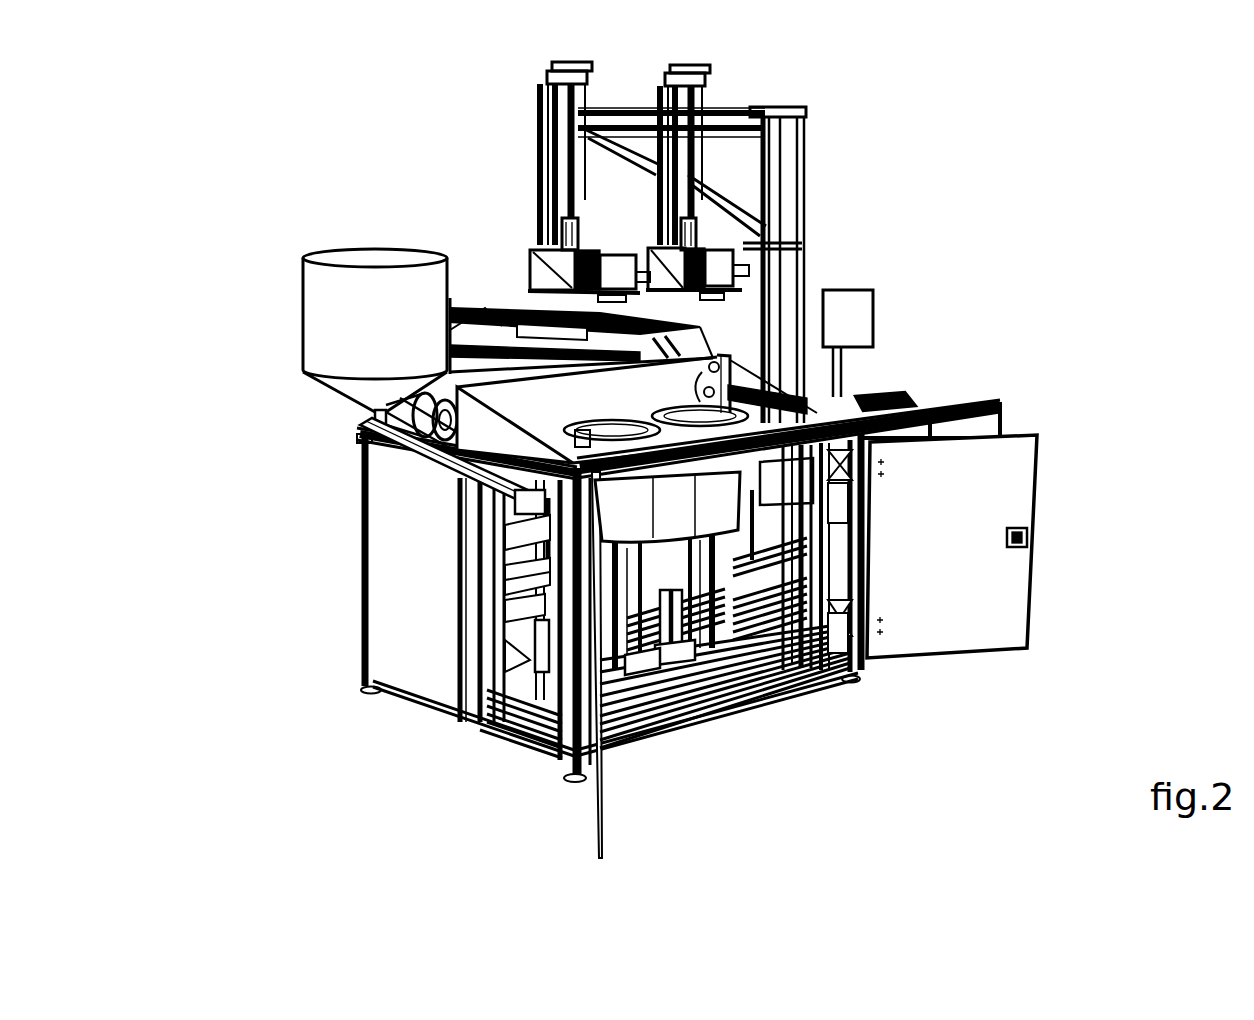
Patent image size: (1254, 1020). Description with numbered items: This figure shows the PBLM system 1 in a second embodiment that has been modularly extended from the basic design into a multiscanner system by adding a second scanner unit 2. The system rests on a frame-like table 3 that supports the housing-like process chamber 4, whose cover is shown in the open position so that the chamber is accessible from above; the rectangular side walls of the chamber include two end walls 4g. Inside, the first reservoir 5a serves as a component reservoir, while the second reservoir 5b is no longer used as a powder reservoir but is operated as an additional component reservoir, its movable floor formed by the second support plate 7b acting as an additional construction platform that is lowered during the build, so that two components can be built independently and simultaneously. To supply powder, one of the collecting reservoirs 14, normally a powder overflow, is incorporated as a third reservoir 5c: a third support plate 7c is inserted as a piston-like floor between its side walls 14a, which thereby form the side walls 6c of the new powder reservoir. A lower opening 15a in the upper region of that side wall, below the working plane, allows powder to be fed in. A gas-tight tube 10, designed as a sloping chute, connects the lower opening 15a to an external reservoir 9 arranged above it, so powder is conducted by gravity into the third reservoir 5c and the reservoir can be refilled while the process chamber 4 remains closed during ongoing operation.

The PBLM system 1 is at (214, 165).
The scanner unit 2 is at (604, 228).
The table 3 is at (935, 406).
The process chamber 4 is at (728, 342).
The end wall 4g is at (478, 455).
The first reservoir 5a is at (605, 425).
The second reservoir 5b is at (700, 408).
The third reservoir 5c is at (527, 535).
The side wall 6c is at (368, 619).
The second support plate 7b is at (815, 410).
The third support plate 7c is at (547, 410).
The external reservoir 9 is at (322, 352).
The tube 10 is at (476, 468).
The collecting reservoir 14 is at (820, 515).
The side wall 14a is at (542, 520).
The lower opening 15a is at (532, 502).